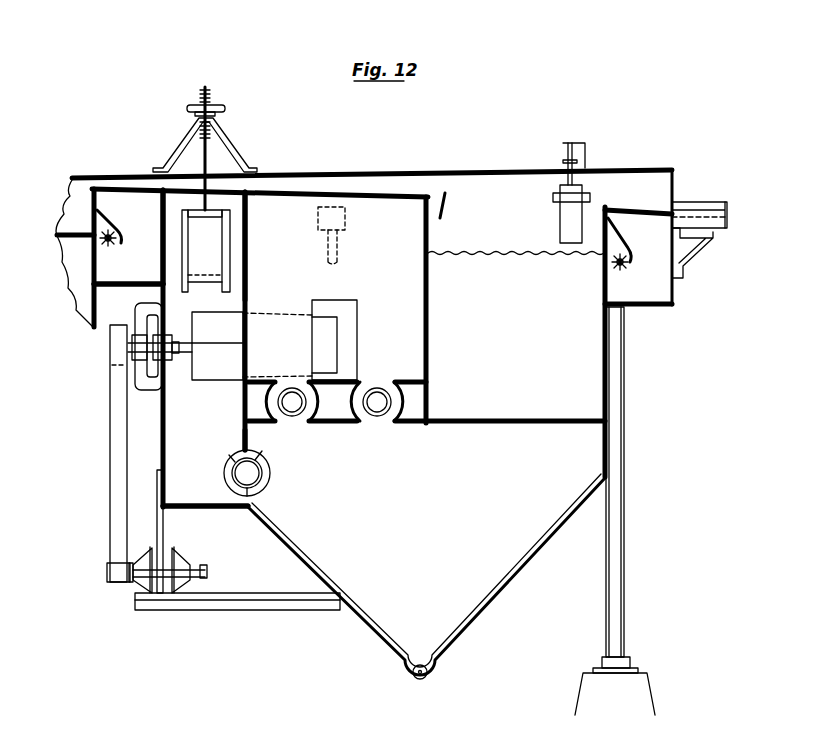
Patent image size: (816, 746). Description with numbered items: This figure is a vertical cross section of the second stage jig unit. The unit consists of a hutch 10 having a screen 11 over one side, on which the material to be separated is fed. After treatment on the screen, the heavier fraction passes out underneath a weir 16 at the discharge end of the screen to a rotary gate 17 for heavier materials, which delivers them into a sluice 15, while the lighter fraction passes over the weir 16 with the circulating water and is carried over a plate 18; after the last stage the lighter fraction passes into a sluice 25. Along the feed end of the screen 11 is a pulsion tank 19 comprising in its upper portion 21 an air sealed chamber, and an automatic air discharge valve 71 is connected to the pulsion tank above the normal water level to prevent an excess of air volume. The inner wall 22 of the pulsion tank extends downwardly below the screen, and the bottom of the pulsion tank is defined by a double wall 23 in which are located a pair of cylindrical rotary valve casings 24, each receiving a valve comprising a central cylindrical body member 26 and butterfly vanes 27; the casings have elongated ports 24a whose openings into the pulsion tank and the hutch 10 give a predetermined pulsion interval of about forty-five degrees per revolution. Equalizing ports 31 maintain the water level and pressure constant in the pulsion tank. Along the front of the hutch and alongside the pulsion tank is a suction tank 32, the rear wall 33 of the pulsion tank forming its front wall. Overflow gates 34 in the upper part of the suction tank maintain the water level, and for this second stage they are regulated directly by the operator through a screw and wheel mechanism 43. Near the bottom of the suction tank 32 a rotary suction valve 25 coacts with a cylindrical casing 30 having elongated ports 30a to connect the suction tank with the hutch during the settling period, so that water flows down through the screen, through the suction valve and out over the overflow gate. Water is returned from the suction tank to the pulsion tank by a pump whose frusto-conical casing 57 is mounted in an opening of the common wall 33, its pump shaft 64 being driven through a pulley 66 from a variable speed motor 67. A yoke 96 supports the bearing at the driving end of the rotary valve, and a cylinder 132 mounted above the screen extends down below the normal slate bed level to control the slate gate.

The hutch 10 is at (485, 606).
The screen 11 is at (494, 256).
The sluice 15 is at (108, 282).
The weir 16 is at (92, 201).
The rotary gate 17 is at (112, 247).
The plate 18 is at (388, 198).
The pulsion tank 19 is at (388, 284).
The upper portion 21 is at (286, 226).
The inner wall 22 is at (425, 323).
The double wall 23 is at (410, 383).
The cylindrical rotary valve casing 24 is at (289, 418).
The elongated port 24a is at (290, 425).
The rotary suction valve 25 is at (262, 477).
The central cylindrical body member 26 is at (378, 392).
The butterfly vane 27 is at (365, 421).
The cylindrical casing 30 is at (262, 495).
The elongated port 30a is at (226, 471).
The equalizing port 31 is at (350, 318).
The suction tank 32 is at (203, 448).
The rear wall 33 is at (246, 268).
The overflow gate 34 is at (211, 268).
The screw and wheel mechanism 43 is at (222, 112).
The casing 57 is at (212, 378).
The pump shaft 64 is at (187, 356).
The pulley 66 is at (108, 354).
The variable speed motor 67 is at (176, 562).
The automatic air discharge valve 71 is at (345, 218).
The yoke 96 is at (148, 386).
The cylinder 132 is at (560, 216).